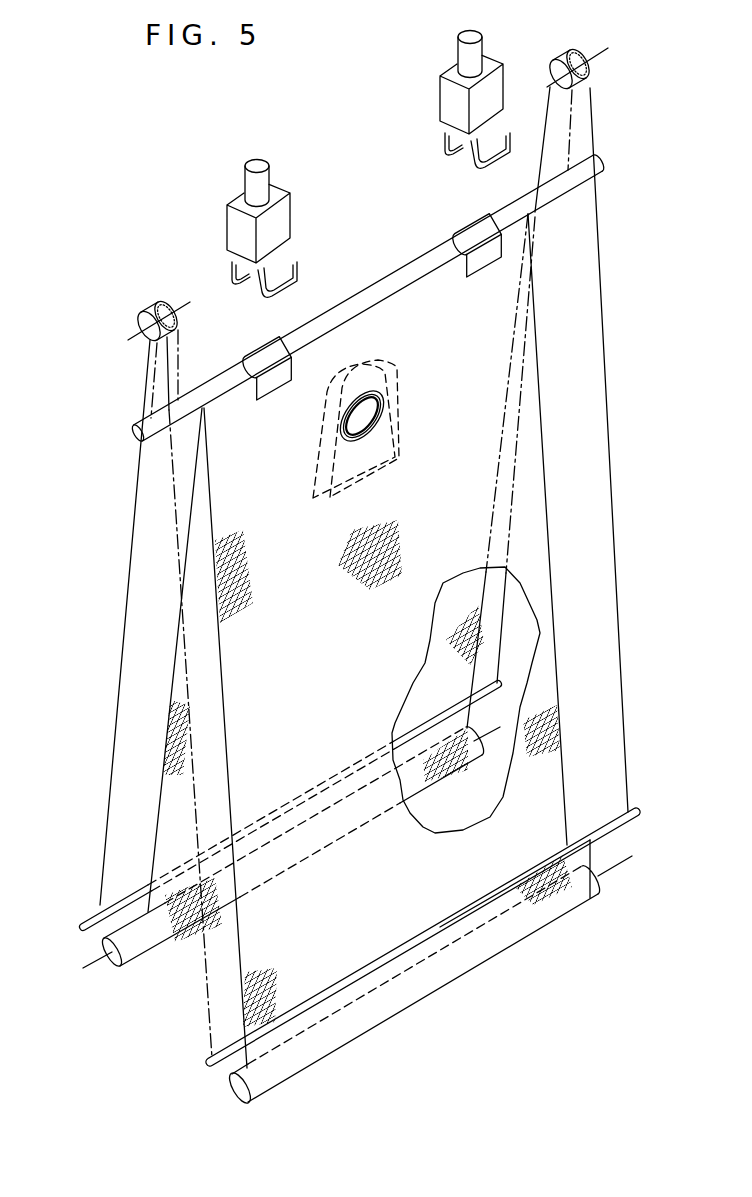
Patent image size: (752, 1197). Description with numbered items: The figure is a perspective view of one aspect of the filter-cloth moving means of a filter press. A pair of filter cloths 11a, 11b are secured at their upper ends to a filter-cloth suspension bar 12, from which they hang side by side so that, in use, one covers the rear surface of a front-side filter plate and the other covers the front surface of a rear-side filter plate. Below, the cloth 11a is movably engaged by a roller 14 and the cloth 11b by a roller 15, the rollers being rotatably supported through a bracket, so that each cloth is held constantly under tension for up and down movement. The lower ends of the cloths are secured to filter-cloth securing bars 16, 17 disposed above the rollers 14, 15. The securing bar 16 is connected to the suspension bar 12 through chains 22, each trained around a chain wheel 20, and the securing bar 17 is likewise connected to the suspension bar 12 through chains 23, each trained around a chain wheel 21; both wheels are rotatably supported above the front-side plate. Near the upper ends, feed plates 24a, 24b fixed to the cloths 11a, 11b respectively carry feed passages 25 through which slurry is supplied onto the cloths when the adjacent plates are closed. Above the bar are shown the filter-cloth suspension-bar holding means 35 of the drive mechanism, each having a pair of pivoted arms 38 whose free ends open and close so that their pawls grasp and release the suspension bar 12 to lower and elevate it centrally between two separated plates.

The filter cloth 11a is at (170, 755).
The filter cloth 11b is at (558, 722).
The filter-cloth suspension bar 12 is at (386, 277).
The roller 14 is at (137, 952).
The roller 15 is at (607, 879).
The filter-cloth securing bar 16 is at (83, 925).
The filter-cloth securing bar 17 is at (614, 830).
The chain wheel 20 is at (558, 77).
The chain wheel 21 is at (594, 70).
The chain 22 is at (522, 387).
The chain 23 is at (609, 444).
The feed plate 24a is at (312, 486).
The feed plate 24b is at (400, 441).
The feed passage 25 is at (355, 412).
The filter-cloth suspension-bar holding means 35 is at (426, 97).
The arm 38 is at (497, 137).